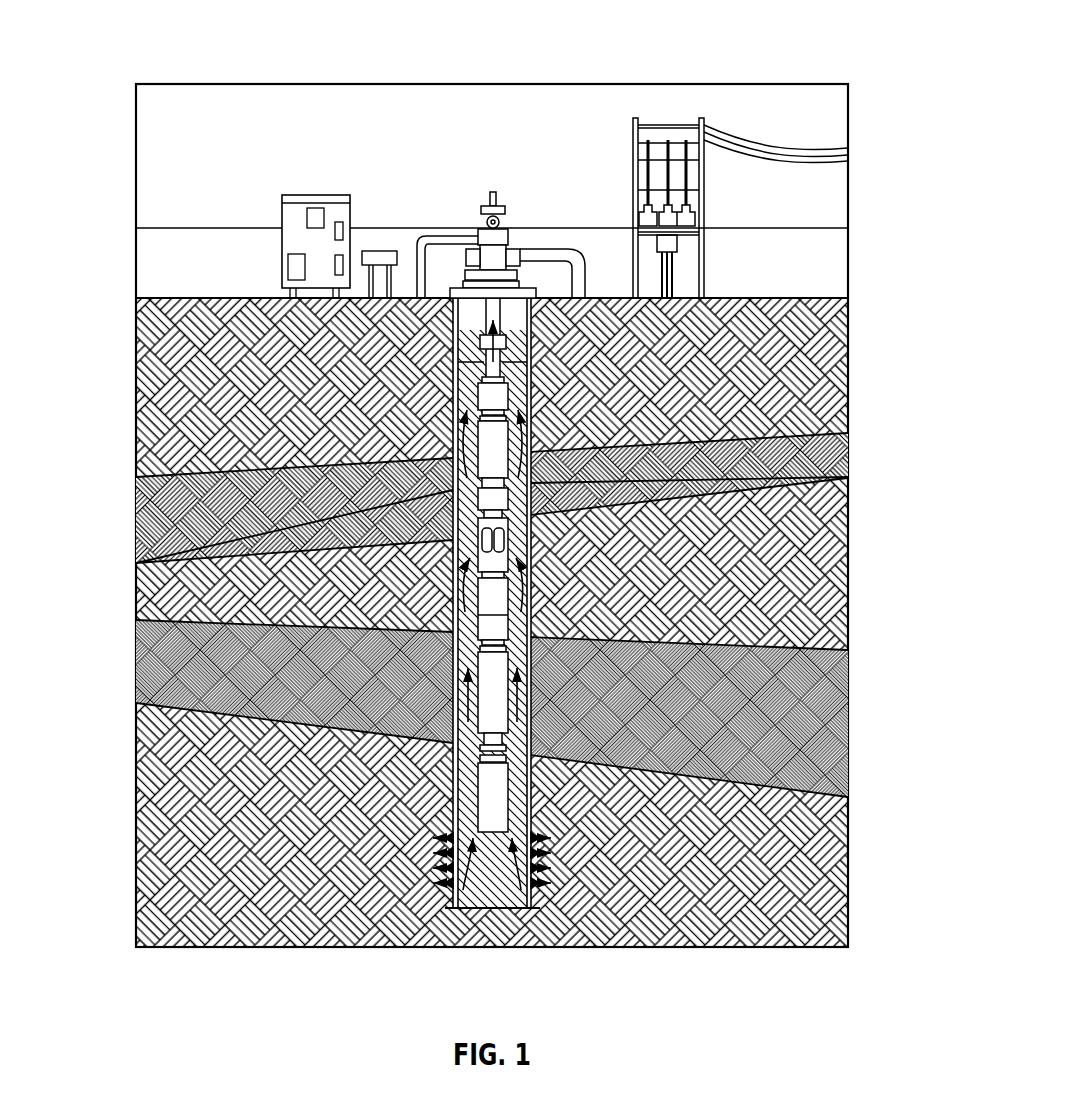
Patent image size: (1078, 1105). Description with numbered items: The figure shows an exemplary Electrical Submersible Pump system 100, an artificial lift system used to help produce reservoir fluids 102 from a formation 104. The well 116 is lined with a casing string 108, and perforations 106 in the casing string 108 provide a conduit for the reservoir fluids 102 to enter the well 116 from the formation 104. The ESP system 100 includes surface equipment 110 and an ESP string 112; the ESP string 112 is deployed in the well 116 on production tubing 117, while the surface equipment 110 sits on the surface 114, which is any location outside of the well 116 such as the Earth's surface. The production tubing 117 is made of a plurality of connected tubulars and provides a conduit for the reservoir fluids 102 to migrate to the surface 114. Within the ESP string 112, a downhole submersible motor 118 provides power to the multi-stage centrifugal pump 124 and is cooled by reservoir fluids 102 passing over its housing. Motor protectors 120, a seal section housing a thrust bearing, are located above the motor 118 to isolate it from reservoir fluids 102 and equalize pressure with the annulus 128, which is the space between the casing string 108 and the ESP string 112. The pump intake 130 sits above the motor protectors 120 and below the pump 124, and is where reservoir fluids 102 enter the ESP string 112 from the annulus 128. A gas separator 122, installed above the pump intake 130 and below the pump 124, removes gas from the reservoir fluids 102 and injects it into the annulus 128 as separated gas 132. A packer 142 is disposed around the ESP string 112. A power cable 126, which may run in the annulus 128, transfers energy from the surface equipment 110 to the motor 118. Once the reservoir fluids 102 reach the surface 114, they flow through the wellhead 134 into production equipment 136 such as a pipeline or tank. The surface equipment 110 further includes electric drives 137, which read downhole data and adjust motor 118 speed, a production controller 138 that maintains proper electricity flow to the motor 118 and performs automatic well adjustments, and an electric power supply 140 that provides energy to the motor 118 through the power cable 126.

The Electrical Submersible Pump (ESP) system 100 is at (126, 44).
The reservoir fluids 102 is at (465, 875).
The formation 104 is at (631, 850).
The perforations 106 is at (455, 858).
The casing string 108 is at (531, 758).
The surface equipment 110 is at (772, 205).
The ESP string 112 is at (458, 706).
The surface 114 is at (826, 258).
The well 116 is at (531, 567).
The production tubing 117 is at (531, 317).
The motor 118 is at (458, 708).
The motor protectors 120 is at (531, 654).
The gas separator 122 is at (485, 541).
The multi-stage centrifugal pump 124 is at (495, 450).
The power cable 126 is at (457, 343).
The annulus 128 is at (531, 680).
The pump intake 130 is at (458, 538).
The separated gas 132 is at (531, 415).
The wellhead 134 is at (482, 230).
The production equipment 136 is at (577, 262).
The electric drives 137 is at (296, 272).
The production controller 138 is at (282, 205).
The electric power supply 140 is at (650, 215).
The packer 142 is at (531, 366).